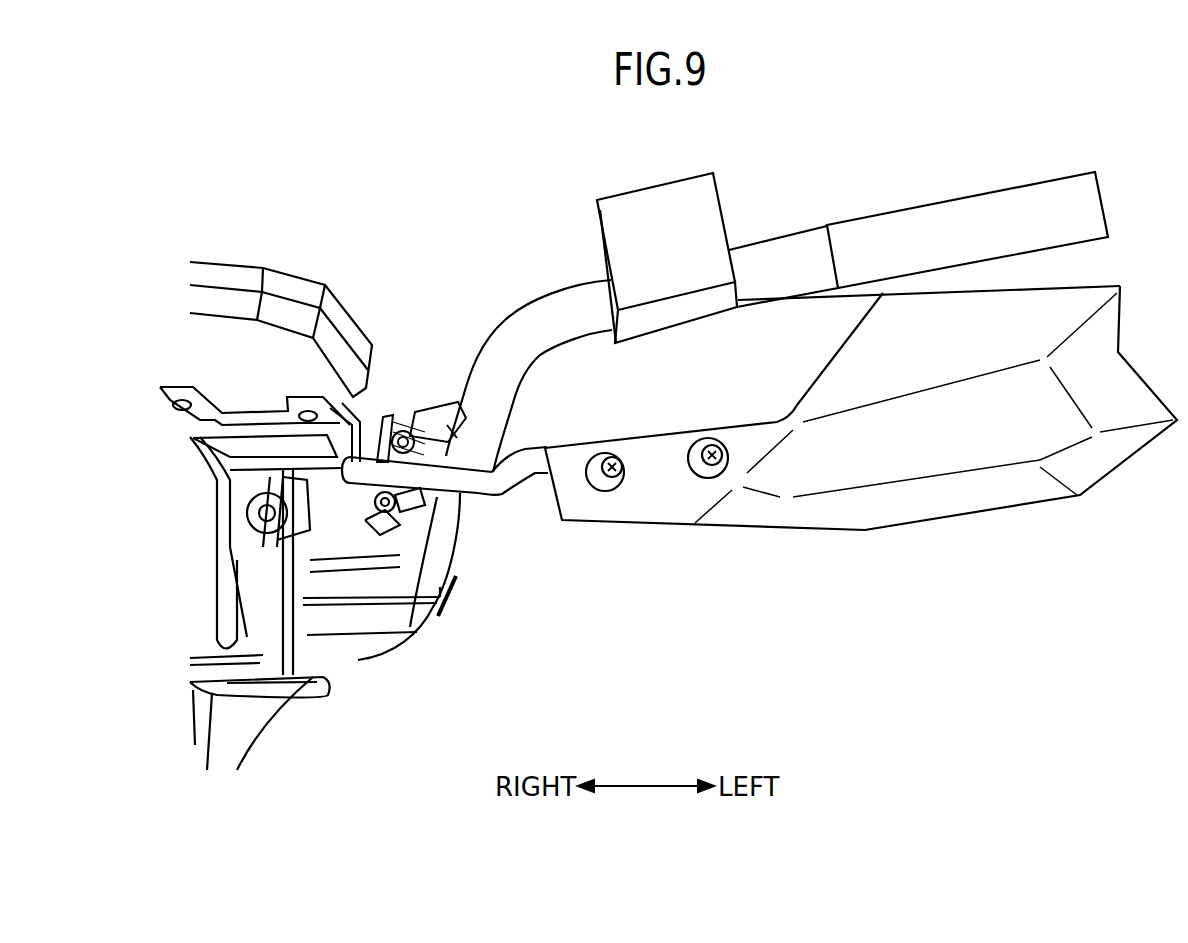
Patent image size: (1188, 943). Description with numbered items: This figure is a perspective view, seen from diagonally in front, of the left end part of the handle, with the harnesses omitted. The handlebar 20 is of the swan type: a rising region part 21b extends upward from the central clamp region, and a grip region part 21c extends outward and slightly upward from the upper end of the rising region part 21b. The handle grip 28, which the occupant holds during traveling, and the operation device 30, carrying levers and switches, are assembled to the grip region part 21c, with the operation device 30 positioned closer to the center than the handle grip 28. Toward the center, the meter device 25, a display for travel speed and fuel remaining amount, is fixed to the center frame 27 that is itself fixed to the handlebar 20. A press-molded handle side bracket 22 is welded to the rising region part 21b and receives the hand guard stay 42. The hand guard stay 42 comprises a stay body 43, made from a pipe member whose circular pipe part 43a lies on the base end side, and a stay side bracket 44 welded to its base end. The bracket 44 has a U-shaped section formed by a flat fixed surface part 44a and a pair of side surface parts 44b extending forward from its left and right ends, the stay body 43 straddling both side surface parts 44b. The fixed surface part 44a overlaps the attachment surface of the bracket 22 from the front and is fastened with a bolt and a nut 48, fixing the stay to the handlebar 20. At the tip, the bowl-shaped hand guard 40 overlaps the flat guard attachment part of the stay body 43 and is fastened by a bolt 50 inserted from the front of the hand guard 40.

The handlebar 20 is at (549, 285).
The rising region part 21b is at (483, 400).
The grip region part 21c is at (776, 258).
The bracket 22 is at (438, 392).
The meter device 25 is at (240, 262).
The center frame 27 is at (267, 640).
The handle grip 28 is at (947, 225).
The operation device 30 is at (645, 182).
The hand guard 40 is at (933, 495).
The hand guard stay 42 is at (454, 508).
The stay body 43 is at (460, 539).
The pipe part 43a is at (481, 485).
The bracket 44 is at (371, 528).
The fixed surface part 44a is at (406, 408).
The side surface part 44b is at (348, 405).
The nut 48 is at (408, 431).
The bolt 50 is at (698, 470).